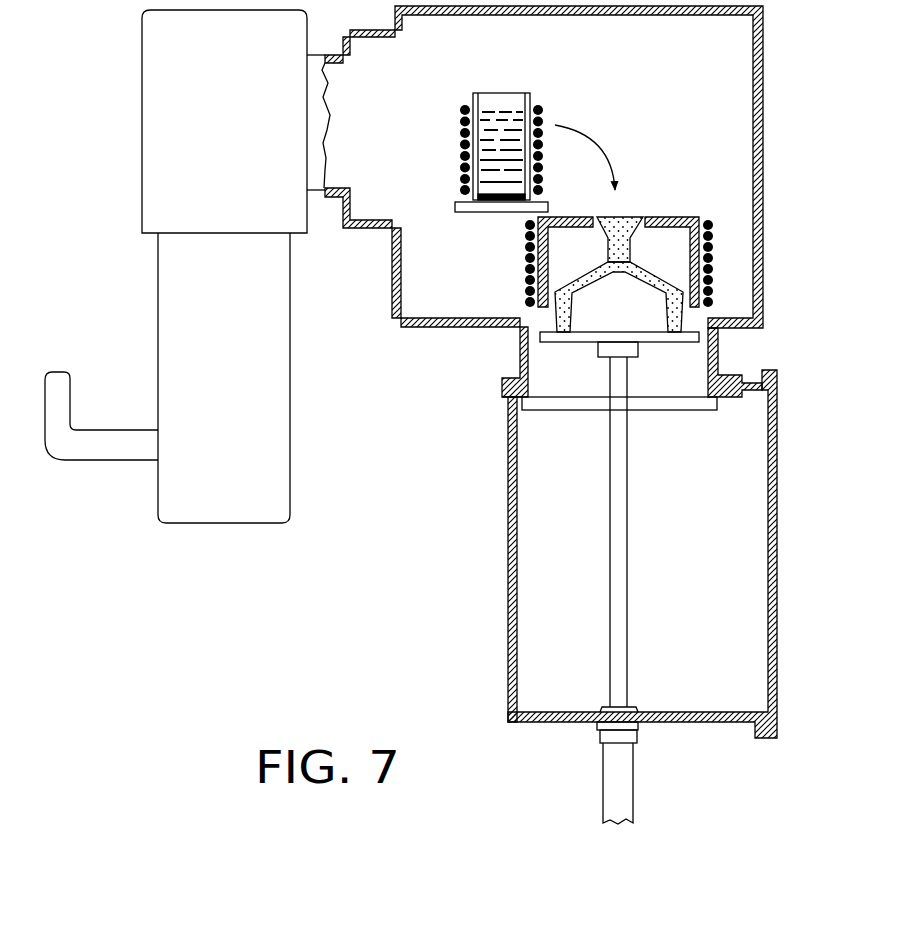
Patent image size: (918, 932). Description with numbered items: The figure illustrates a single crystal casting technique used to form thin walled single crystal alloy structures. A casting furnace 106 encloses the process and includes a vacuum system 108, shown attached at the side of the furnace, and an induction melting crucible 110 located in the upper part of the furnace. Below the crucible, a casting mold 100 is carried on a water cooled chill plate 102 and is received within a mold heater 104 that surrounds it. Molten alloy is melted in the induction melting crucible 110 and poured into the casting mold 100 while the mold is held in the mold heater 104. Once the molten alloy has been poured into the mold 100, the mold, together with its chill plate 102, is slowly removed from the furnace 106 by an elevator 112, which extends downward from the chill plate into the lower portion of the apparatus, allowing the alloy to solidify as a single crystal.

The casting mold 100 is at (558, 322).
The water cooled chill plate 102 is at (659, 347).
The mold heater 104 is at (712, 245).
The casting furnace 106 is at (790, 130).
The vacuum system 108 is at (163, 93).
The induction melting crucible 110 is at (527, 97).
The elevator 112 is at (618, 552).